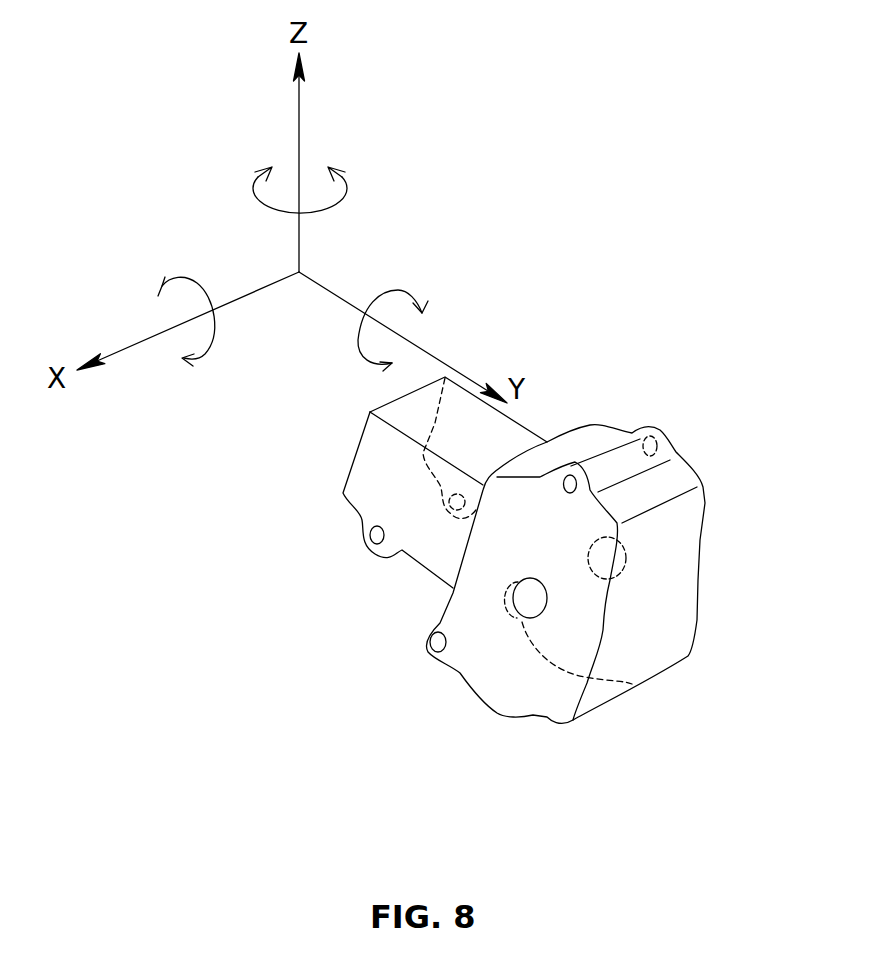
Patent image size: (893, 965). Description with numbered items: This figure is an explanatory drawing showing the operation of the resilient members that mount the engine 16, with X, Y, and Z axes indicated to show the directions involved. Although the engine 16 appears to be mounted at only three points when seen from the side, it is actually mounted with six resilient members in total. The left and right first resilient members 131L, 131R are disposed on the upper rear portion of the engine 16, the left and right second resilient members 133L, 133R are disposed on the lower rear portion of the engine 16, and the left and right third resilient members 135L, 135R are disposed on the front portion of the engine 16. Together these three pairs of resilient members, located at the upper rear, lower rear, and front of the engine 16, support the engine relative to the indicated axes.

The engine 16 is at (528, 685).
The left first resilient member 131L is at (517, 580).
The right first resilient member 131R is at (658, 448).
The left second resilient member 133L is at (430, 655).
The right second resilient member 133R is at (547, 617).
The left third resilient member 135L is at (373, 546).
The right third resilient member 135R is at (460, 496).